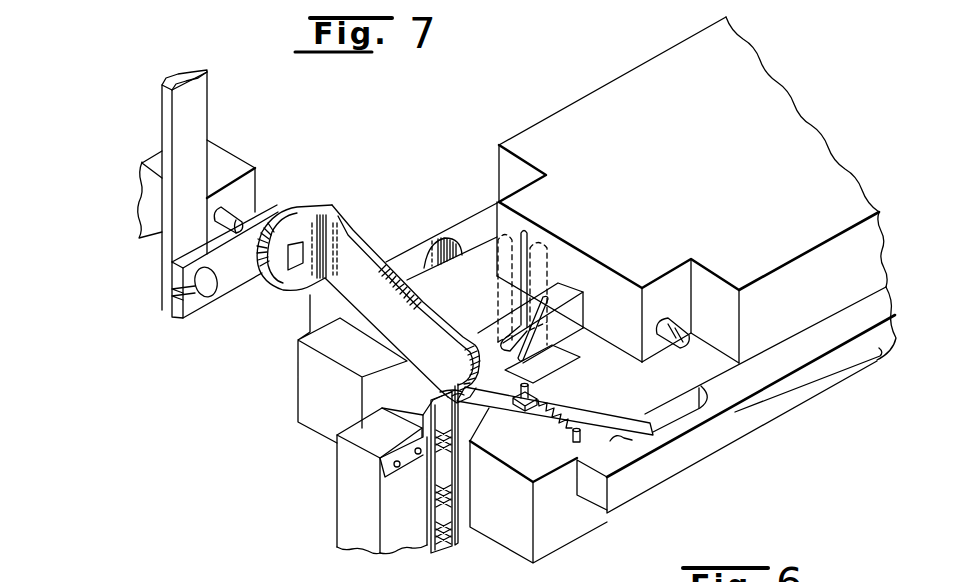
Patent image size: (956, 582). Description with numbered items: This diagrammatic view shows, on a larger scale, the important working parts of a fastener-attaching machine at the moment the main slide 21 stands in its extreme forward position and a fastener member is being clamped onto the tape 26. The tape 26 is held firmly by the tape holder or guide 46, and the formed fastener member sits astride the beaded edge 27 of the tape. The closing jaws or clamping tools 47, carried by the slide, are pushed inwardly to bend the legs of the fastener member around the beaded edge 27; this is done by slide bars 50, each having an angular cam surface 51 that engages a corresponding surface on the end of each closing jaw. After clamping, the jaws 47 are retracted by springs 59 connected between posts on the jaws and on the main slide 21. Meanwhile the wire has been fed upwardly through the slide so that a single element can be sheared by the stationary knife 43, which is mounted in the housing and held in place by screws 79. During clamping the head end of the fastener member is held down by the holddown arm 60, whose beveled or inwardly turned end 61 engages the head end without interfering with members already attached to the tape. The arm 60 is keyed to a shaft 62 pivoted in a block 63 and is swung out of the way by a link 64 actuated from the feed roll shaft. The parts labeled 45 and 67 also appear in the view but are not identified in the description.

The main slide 21 is at (600, 528).
The tape 26 is at (440, 554).
The beaded edge 27 is at (460, 537).
The stationary shearing block or knife 43 is at (567, 296).
The pin 45 is at (552, 218).
The tape holder or guide 46 is at (340, 490).
The closing jaws or clamping tools 47 is at (592, 408).
The slide bars 50 is at (647, 494).
The angular cam surface 51 is at (616, 438).
The springs 59 is at (543, 410).
The holddown arm 60 is at (368, 244).
The end of holddown arm 61 is at (463, 385).
The shaft 62 is at (250, 207).
The block 63 is at (231, 153).
The link 64 is at (210, 103).
The bracket (hidden) 67 is at (498, 305).
The screws 79 is at (679, 342).